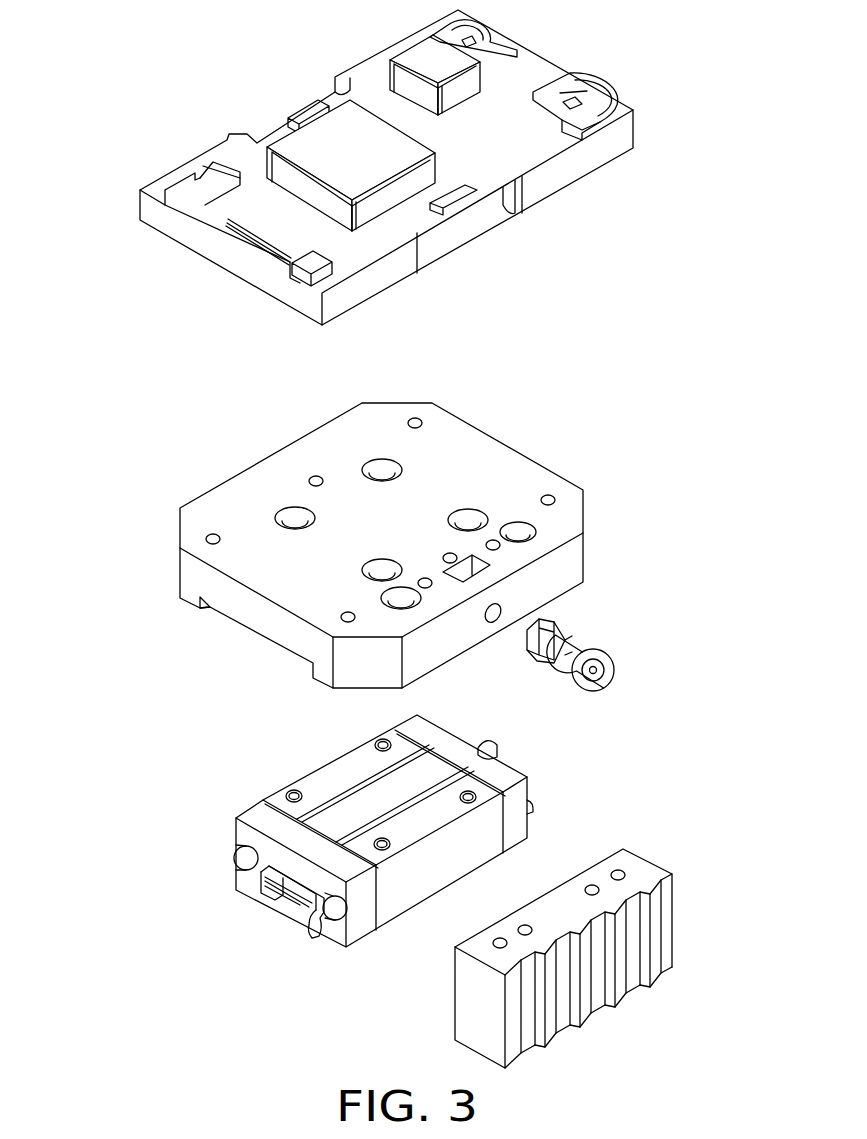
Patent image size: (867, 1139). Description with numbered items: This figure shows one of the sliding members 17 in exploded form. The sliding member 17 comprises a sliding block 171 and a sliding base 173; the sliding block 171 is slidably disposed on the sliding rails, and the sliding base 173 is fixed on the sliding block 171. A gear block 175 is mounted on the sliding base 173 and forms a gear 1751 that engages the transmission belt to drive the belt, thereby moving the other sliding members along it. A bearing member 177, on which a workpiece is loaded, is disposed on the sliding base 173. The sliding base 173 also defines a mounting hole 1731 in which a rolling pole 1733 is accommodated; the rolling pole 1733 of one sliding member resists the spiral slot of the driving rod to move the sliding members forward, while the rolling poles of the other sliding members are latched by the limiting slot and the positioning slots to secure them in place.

The sliding member 17 is at (288, 71).
The bearing member 177 is at (158, 178).
The mounting plate 173 is at (180, 508).
The pivot hole 1731 is at (502, 607).
The rolling pole 1733 is at (612, 658).
The slider carriage 171 is at (236, 829).
The rack 175 is at (644, 862).
The gear 1751 is at (637, 953).